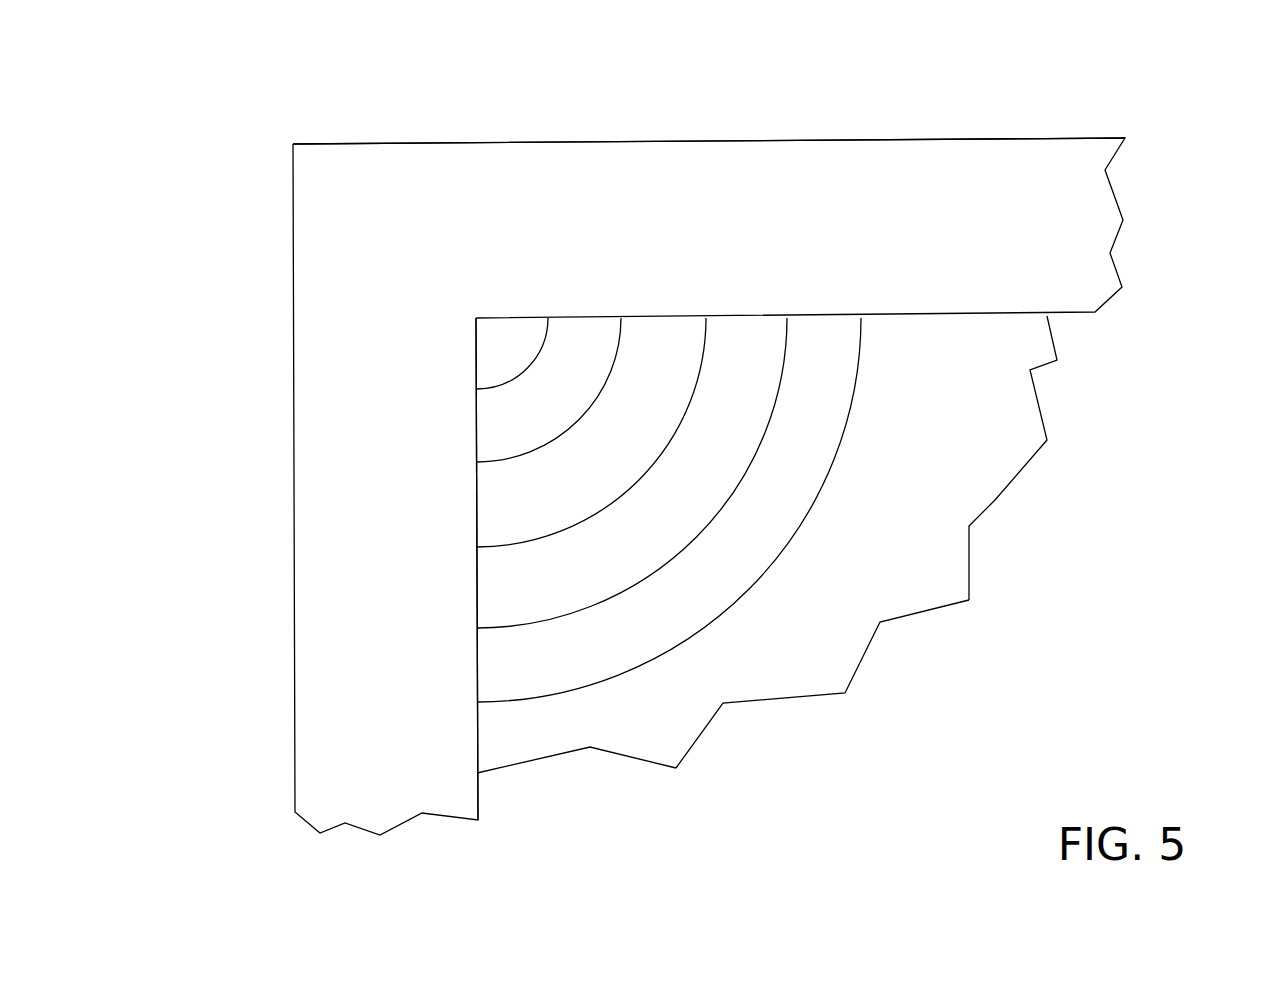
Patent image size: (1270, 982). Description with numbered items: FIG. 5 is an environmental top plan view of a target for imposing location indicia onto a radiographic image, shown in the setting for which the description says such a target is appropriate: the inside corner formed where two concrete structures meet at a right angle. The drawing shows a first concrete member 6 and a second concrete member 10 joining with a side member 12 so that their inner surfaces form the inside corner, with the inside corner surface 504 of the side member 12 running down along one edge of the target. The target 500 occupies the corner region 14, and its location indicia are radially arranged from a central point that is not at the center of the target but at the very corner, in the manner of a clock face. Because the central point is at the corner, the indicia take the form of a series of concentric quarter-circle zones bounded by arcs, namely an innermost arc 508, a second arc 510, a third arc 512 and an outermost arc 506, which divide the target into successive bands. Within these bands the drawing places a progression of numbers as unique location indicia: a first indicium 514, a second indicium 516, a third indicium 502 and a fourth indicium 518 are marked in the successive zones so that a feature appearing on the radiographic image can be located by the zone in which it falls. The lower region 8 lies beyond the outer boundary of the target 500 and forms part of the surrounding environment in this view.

The first member 6 is at (446, 217).
The lower region 8 is at (624, 796).
The top member 10 is at (907, 163).
The side member 12 is at (295, 635).
The corner region 14 is at (936, 444).
The corner zone 500 is at (912, 524).
The fourth zone 502 is at (748, 338).
The inner side surface 504 is at (477, 513).
The outer arc boundary 506 is at (673, 642).
The first arc boundary 508 is at (513, 462).
The second arc boundary 510 is at (515, 547).
The third arc boundary 512 is at (528, 628).
The second zone 514 is at (563, 327).
The third zone 516 is at (648, 325).
The fifth zone 518 is at (806, 323).